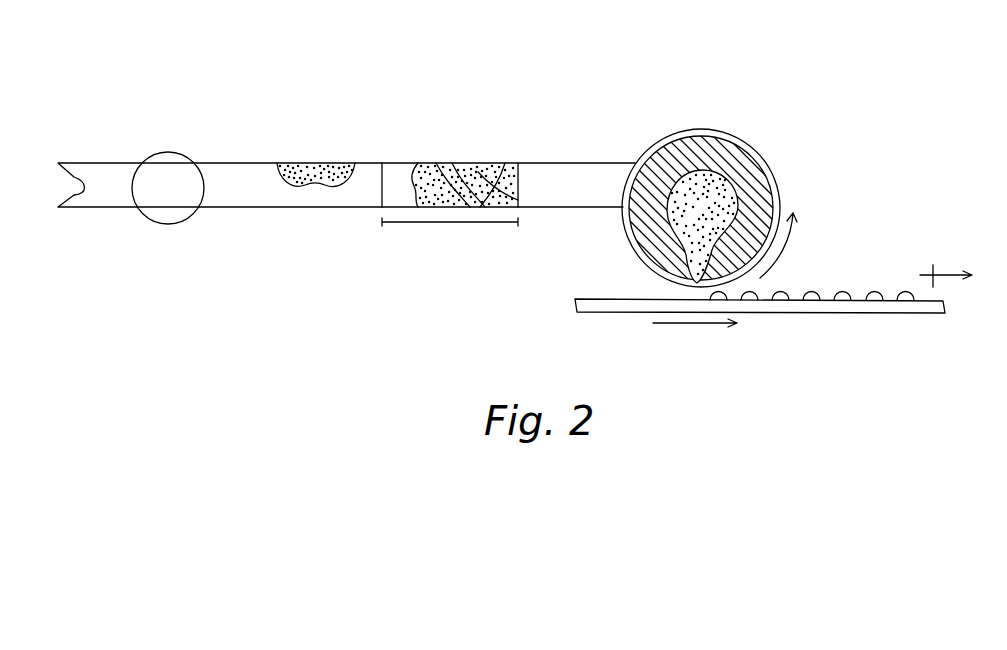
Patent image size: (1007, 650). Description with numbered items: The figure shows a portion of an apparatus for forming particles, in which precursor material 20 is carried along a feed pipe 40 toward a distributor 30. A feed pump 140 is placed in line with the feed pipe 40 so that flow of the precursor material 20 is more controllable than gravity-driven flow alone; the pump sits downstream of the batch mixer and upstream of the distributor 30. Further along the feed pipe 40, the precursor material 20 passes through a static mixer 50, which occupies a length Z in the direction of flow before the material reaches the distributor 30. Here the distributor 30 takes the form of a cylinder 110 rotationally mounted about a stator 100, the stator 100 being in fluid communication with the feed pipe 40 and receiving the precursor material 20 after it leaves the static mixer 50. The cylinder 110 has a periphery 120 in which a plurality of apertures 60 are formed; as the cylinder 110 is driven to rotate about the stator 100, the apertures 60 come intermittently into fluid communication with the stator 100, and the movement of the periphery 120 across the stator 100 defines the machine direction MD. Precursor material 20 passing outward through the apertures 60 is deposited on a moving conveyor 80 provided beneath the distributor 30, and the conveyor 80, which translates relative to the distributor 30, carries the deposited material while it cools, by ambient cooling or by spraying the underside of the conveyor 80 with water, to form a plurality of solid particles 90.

The precursor material 20 is at (304, 168).
The distributor 30 is at (793, 153).
The feed pipe 40 is at (247, 187).
The static mixer 50 is at (455, 170).
The apertures 60 is at (733, 133).
The conveyor 80 is at (610, 307).
The solid particles 90 is at (842, 291).
The stator 100 is at (742, 222).
The cylinder 110 is at (687, 175).
The periphery 120 is at (693, 288).
The feed pump 140 is at (170, 205).
The length Z is at (450, 228).
The machine direction MD is at (948, 275).